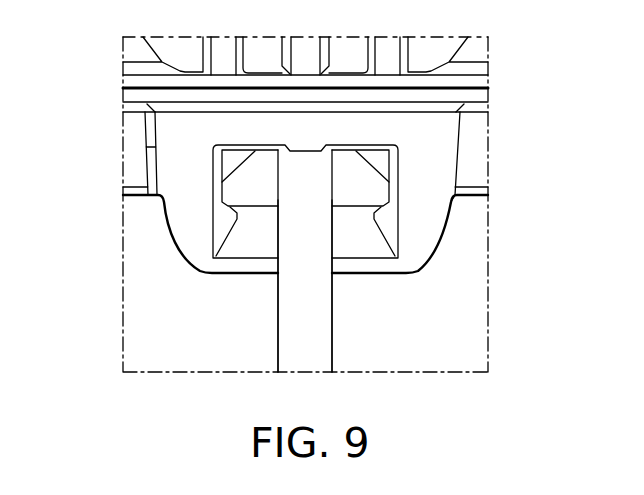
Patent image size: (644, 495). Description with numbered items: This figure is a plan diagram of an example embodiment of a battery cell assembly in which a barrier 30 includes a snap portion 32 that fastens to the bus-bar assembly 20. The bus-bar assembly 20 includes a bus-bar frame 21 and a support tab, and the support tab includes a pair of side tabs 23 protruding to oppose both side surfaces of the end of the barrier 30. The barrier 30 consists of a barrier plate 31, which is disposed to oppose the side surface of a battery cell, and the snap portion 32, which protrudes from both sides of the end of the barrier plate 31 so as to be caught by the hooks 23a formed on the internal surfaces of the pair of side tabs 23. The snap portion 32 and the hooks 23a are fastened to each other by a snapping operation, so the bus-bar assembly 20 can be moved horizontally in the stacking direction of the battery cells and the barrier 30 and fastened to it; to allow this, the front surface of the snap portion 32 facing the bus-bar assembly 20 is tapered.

The bus-bar assembly 20 is at (567, 98).
The bus-bar frame 21 is at (478, 95).
The side tabs 23 is at (427, 167).
The hook 23a is at (387, 225).
The barrier 30 is at (62, 242).
The barrier plate 31 is at (293, 313).
The snap portion 32 is at (258, 181).